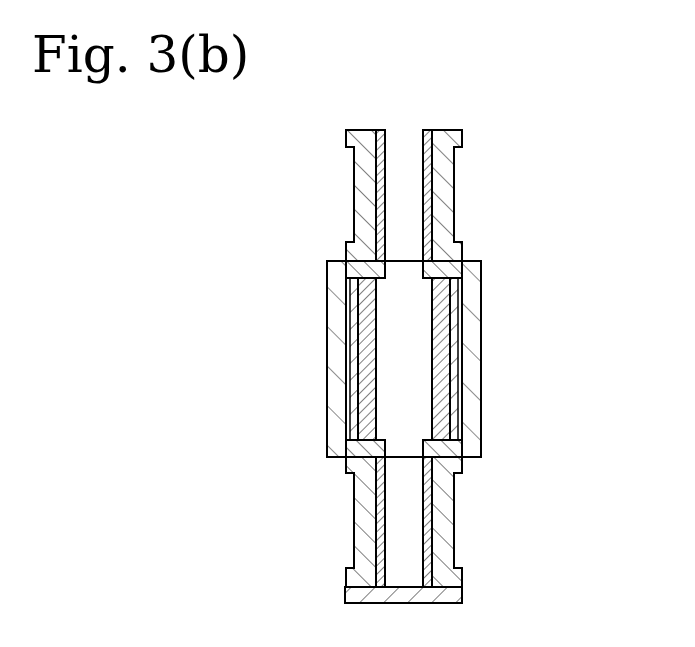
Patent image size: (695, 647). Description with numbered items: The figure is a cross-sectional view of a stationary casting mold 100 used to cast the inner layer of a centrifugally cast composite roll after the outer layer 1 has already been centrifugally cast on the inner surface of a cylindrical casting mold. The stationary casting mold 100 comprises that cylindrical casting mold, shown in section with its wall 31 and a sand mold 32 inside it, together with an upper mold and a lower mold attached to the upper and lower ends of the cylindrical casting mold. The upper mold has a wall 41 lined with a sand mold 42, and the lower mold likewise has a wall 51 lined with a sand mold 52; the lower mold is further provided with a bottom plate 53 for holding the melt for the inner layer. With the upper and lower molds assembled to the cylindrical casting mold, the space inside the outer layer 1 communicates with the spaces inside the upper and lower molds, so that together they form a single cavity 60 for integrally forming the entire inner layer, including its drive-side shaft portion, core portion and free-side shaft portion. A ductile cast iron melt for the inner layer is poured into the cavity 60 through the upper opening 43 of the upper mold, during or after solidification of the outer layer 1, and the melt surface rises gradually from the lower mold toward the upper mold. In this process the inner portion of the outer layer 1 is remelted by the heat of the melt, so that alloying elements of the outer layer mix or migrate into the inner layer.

The stationary casting mold 100 is at (477, 355).
The outer layer 1 is at (460, 386).
The housing 31 is at (473, 350).
The sand mold 32 is at (460, 298).
The upper pipe 41 is at (450, 178).
The sand mold 42 is at (433, 214).
The upper opening 43 is at (408, 130).
The lower pipe 51 is at (448, 492).
The sand mold 52 is at (434, 537).
The bottom plate 53 is at (458, 594).
The cavity 60 is at (388, 363).